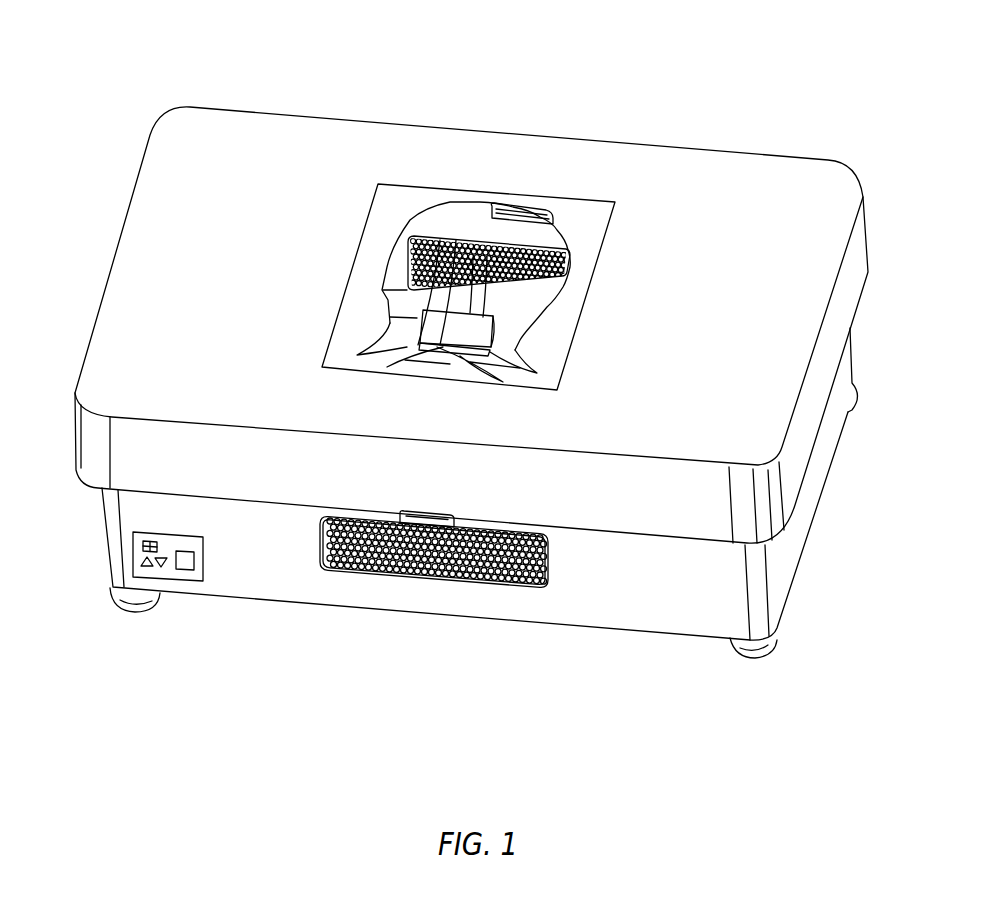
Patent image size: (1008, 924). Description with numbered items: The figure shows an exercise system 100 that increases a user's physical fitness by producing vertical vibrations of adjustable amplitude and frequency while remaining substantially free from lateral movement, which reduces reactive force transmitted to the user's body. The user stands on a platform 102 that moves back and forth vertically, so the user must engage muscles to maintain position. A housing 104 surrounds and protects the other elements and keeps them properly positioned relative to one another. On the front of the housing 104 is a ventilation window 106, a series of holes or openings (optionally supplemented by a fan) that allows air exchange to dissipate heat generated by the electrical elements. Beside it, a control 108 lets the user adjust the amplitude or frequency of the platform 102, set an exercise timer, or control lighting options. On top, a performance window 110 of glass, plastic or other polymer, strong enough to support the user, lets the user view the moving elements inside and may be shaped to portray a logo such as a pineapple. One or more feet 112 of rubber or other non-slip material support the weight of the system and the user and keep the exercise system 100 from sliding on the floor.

The exercise system 100 is at (480, 370).
The platform 102 is at (295, 157).
The housing 104 is at (802, 512).
The ventilation window 106 is at (503, 572).
The control 108 is at (173, 573).
The performance window 110 is at (552, 235).
The feet 112 is at (772, 643).